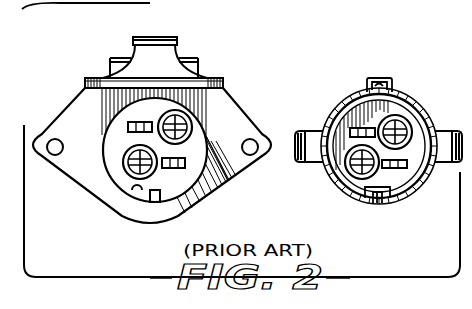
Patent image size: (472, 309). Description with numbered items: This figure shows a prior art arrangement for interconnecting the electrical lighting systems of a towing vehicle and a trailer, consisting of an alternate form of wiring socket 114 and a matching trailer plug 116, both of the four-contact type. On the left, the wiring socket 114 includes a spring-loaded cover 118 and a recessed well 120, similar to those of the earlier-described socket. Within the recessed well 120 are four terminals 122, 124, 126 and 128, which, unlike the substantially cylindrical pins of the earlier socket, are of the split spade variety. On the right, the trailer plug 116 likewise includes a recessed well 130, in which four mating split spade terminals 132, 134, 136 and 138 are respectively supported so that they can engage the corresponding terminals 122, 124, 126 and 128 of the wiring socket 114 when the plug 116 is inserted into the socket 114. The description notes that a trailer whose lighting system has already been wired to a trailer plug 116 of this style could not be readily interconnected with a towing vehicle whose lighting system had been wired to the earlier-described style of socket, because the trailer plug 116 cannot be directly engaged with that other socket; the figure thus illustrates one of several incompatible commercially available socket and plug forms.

The wiring socket 114 is at (244, 113).
The trailer plug 116 is at (398, 98).
The spring-loaded cover 118 is at (170, 56).
The recessed well 120 is at (132, 191).
The terminal 122 is at (107, 114).
The terminal 124 is at (127, 168).
The terminal 126 is at (188, 118).
The terminal 128 is at (187, 164).
The recessed well 130 is at (352, 110).
The mating split spade terminal 132 is at (406, 128).
The mating split spade terminal 134 is at (404, 168).
The mating split spade terminal 136 is at (352, 125).
The mating split spade terminal 138 is at (353, 170).